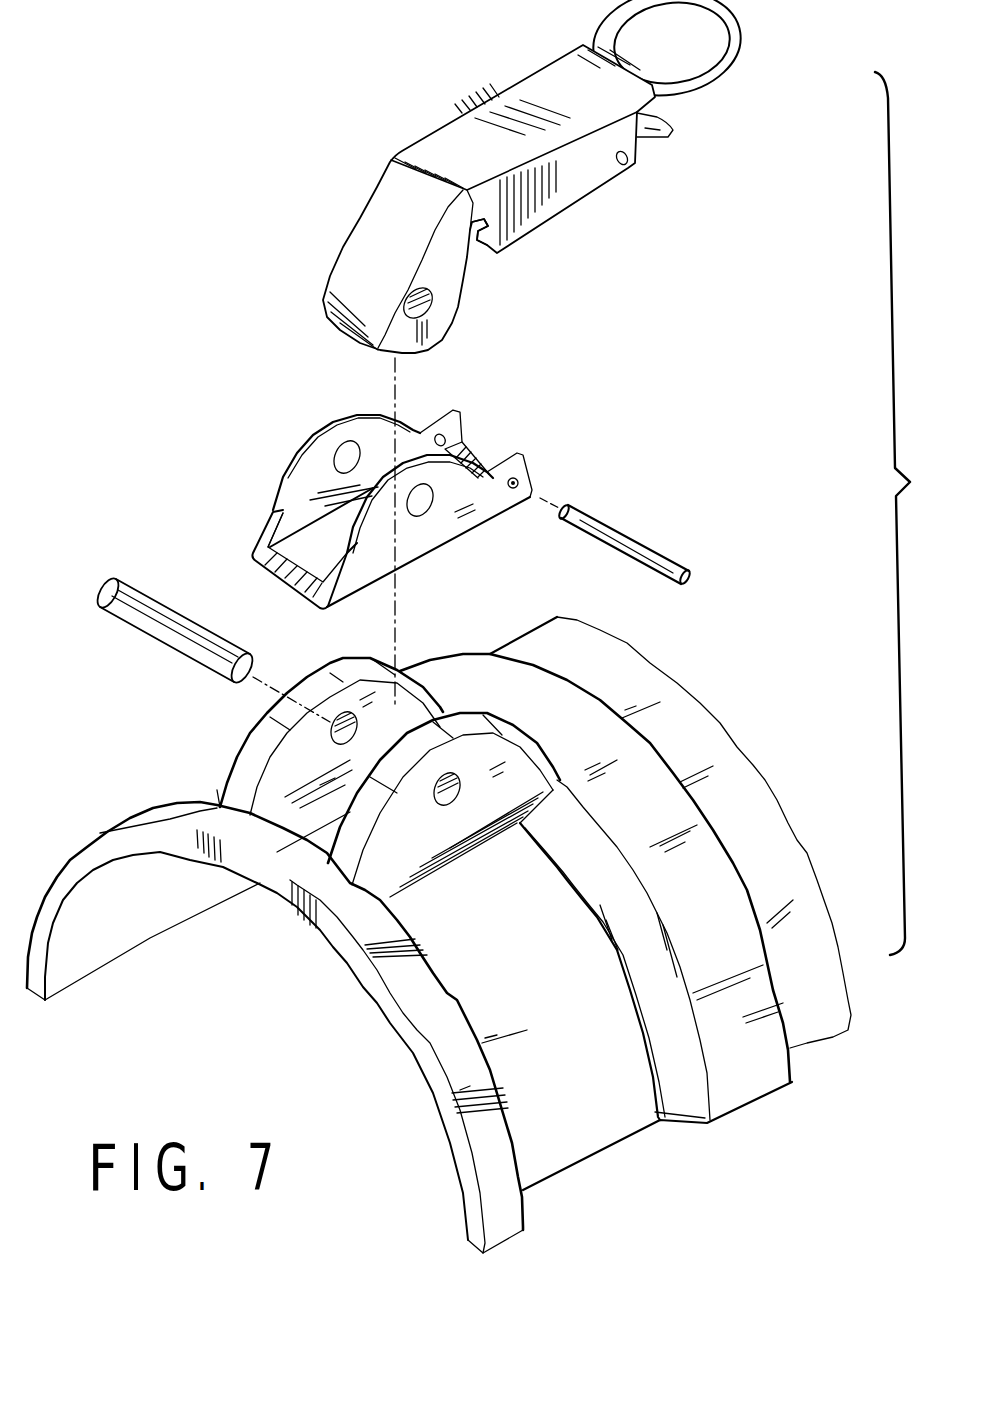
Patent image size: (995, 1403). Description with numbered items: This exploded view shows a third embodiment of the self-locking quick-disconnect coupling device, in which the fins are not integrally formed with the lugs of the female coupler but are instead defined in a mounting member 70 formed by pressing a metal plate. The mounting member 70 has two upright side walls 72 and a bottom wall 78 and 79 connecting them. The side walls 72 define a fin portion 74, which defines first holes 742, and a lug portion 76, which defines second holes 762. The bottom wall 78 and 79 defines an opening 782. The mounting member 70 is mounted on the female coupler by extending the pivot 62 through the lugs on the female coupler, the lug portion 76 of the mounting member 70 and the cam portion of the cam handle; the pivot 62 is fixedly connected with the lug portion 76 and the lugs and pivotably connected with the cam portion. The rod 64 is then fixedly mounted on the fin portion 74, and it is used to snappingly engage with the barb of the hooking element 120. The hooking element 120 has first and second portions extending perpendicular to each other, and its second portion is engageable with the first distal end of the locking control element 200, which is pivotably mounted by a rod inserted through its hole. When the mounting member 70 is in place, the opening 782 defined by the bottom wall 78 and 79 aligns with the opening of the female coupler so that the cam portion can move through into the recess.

The pivot 62 is at (158, 627).
The rod 64 is at (653, 552).
The mounting member 70 is at (384, 475).
The side walls 72 is at (427, 543).
The fin portion 74 is at (519, 478).
The first holes 742 is at (517, 490).
The lug portion 76 is at (316, 434).
The second holes 762 is at (352, 455).
The bottom wall 78 is at (303, 577).
The opening 782 is at (262, 532).
The bottom wall 79 is at (480, 450).
The hooking element 120 is at (474, 246).
The locking control element 200 is at (663, 137).